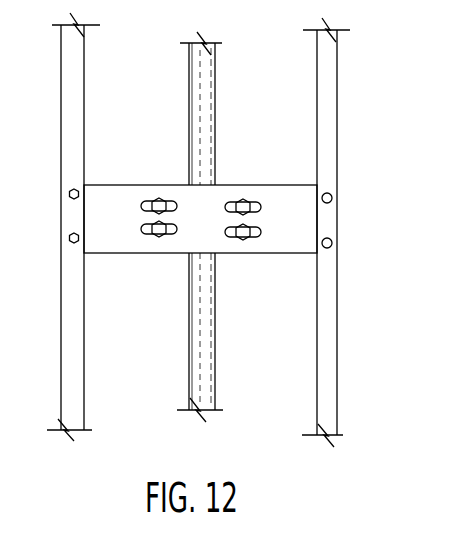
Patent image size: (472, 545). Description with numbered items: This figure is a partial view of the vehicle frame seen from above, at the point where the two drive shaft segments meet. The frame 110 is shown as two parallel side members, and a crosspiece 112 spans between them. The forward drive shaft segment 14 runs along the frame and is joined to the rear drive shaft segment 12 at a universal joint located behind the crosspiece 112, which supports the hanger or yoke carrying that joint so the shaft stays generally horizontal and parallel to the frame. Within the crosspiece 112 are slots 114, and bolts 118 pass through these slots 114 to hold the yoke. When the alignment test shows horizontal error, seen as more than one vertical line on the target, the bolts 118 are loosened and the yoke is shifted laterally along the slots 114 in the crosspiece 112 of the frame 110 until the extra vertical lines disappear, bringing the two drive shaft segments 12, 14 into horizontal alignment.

The rear drive shaft segment 12 is at (213, 341).
The forward drive shaft segment 14 is at (214, 76).
The frame 110 is at (337, 115).
The crosspiece 112 is at (303, 224).
The slots 114 is at (229, 202).
The bolts 118 is at (158, 200).